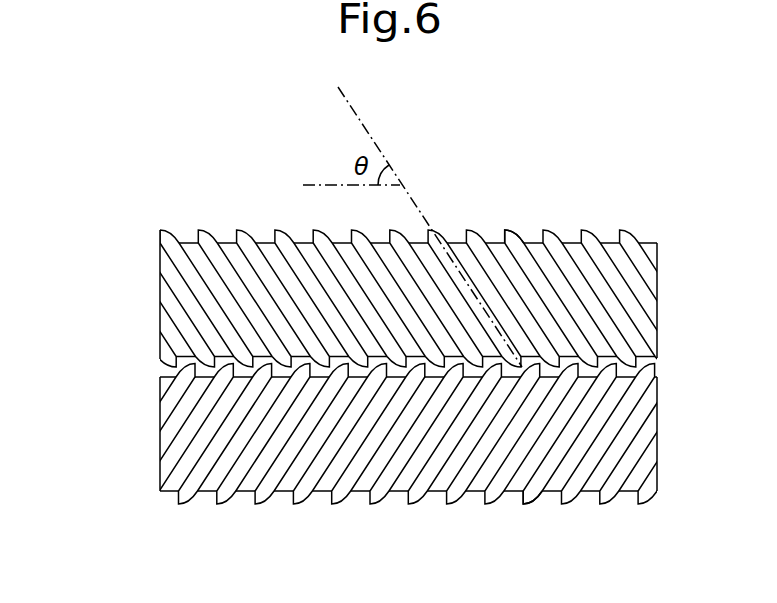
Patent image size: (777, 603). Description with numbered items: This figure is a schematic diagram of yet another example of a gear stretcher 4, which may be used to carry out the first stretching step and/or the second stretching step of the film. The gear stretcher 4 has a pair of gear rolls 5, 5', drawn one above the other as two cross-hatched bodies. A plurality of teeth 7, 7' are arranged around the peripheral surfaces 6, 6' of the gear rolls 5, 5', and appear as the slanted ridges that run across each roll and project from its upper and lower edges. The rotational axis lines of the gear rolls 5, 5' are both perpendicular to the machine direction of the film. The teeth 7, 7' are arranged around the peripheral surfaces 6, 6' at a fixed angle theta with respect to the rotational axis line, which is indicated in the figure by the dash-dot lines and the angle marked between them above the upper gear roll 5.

The gear stretcher 4 is at (123, 198).
The gear roll 5 is at (441, 248).
The peripheral surface 6 is at (401, 298).
The teeth 7 is at (534, 198).
The gear roll 5' is at (344, 454).
The peripheral surface 6' is at (394, 434).
The teeth 7' is at (556, 533).